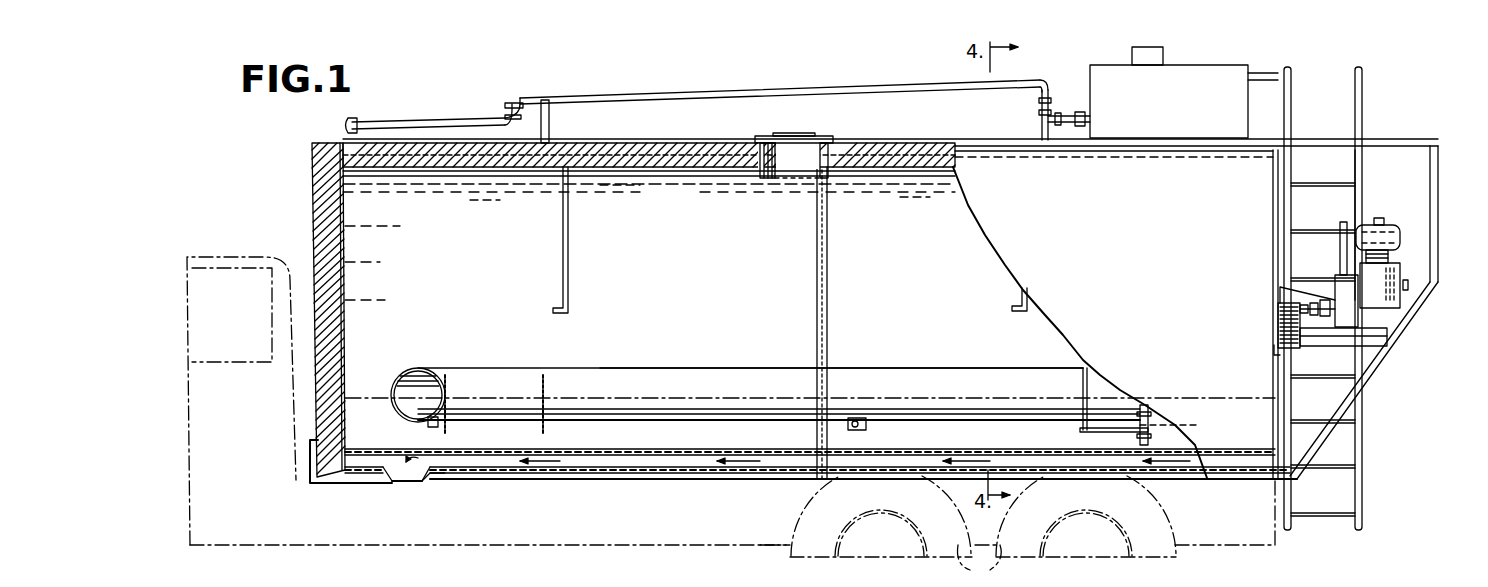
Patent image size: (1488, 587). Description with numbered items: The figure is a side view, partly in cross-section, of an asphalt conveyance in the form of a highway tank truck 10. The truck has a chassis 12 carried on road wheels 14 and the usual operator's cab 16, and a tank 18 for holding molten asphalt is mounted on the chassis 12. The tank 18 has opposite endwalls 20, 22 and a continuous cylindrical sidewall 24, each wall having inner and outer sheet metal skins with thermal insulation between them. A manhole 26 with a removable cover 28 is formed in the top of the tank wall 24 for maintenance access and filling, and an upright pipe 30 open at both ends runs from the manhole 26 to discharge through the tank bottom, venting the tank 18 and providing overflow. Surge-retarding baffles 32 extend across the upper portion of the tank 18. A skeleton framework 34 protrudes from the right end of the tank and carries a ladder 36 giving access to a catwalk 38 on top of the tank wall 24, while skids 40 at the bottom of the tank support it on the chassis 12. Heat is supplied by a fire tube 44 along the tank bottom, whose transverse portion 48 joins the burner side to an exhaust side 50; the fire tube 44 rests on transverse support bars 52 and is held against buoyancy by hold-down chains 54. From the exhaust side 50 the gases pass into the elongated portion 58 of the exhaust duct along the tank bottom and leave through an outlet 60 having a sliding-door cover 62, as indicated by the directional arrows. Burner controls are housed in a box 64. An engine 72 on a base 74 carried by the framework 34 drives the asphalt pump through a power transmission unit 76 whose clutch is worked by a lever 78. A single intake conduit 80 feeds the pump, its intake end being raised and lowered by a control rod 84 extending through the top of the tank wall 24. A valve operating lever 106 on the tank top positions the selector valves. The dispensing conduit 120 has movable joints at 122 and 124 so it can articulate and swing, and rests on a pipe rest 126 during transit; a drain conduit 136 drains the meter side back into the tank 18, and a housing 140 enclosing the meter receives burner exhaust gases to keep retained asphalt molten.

The highway tank truck 10 is at (248, 178).
The chassis 12 is at (665, 546).
The road wheels 14 is at (1000, 558).
The operator's cab 16 is at (246, 258).
The tank 18 is at (490, 254).
The endwall 20 is at (312, 225).
The endwall 22 is at (1272, 224).
The sidewall 24 is at (692, 152).
The manhole 26 is at (776, 170).
The removable cover 28 is at (812, 136).
The upright pipe 30 is at (828, 308).
The surge-retarding baffles 32 is at (569, 291).
The skeleton framework 34 is at (1438, 212).
The ladder 36 is at (1360, 205).
The catwalk 38 is at (1342, 136).
The skids 40 is at (310, 452).
The fire tube 44 is at (903, 367).
The transverse portion 48 is at (408, 400).
The exhaust side 50 is at (716, 374).
The support bars 52 is at (428, 423).
The hold-down chains 54 is at (540, 402).
The elongated portion 58 is at (650, 480).
The outlet 60 is at (396, 483).
The sliding-door cover 62 is at (425, 488).
The box 64 is at (1280, 326).
The engine 72 is at (1400, 310).
The base 74 is at (1372, 355).
The power transmission unit 76 is at (1290, 288).
The lever 78 is at (1340, 248).
The intake conduit 80 is at (1147, 430).
The control rod 84 is at (1082, 384).
The valve operating lever 106 is at (1260, 74).
The dispensing conduit 120 is at (776, 91).
The movable joint 122 is at (1062, 66).
The movable joint 124 is at (516, 102).
The pipe rest 126 is at (552, 131).
The drain conduit 136 is at (1042, 134).
The housing 140 is at (1178, 109).